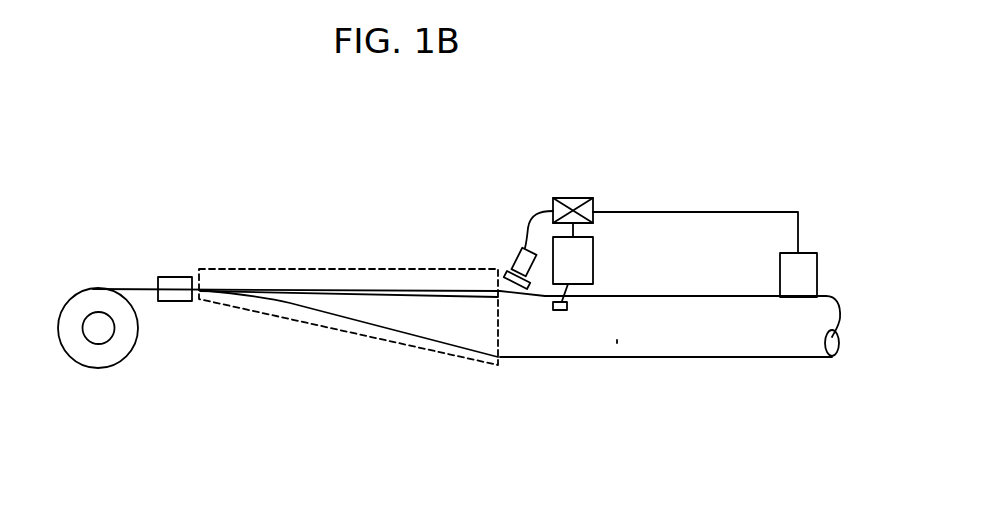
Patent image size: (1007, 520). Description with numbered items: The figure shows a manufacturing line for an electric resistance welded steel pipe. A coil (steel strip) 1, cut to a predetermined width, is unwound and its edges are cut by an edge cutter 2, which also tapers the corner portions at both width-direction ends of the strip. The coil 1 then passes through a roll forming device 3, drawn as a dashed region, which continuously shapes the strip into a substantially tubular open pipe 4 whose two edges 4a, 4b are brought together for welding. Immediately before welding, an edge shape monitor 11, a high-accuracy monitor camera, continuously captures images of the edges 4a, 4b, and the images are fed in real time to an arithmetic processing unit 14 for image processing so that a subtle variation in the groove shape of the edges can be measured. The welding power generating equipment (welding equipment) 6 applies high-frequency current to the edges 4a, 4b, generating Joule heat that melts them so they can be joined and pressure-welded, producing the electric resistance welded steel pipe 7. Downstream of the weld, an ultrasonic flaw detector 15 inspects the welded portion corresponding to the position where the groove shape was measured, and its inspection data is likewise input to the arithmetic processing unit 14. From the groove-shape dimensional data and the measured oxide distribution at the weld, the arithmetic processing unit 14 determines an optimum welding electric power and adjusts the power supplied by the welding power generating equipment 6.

The coil (steel strip) 1 is at (108, 370).
The edge cutter 2 is at (175, 277).
The roll forming device 3 is at (229, 305).
The open pipe 4 is at (513, 347).
The edge of open pipe 4a is at (571, 344).
The edge of open pipe 4b is at (546, 303).
The welding power generating equipment (welding equipment) 6 is at (588, 258).
The electric resistance welded steel pipe 7 is at (618, 341).
The edge shape monitor 11 is at (512, 264).
The arithmetic processing unit 14 is at (573, 198).
The ultrasonic flaw detector 15 is at (810, 253).